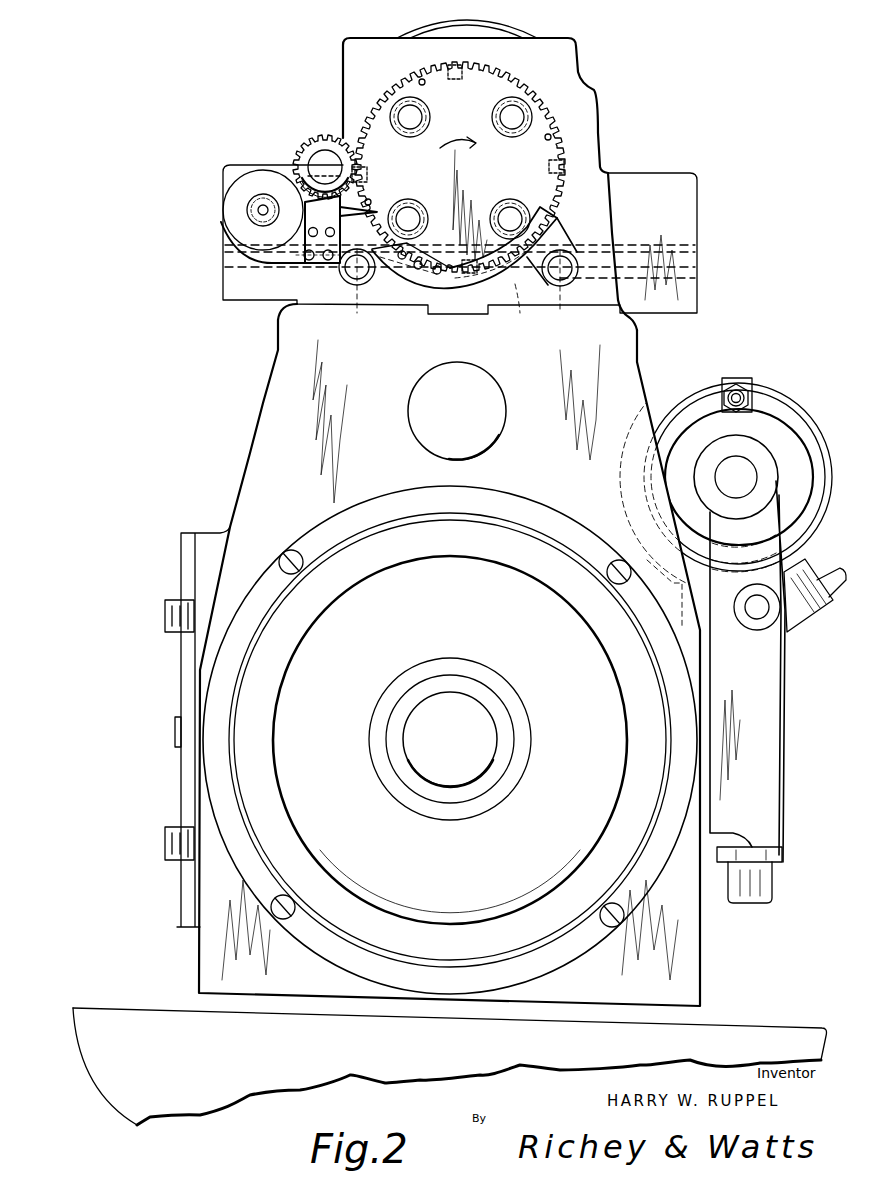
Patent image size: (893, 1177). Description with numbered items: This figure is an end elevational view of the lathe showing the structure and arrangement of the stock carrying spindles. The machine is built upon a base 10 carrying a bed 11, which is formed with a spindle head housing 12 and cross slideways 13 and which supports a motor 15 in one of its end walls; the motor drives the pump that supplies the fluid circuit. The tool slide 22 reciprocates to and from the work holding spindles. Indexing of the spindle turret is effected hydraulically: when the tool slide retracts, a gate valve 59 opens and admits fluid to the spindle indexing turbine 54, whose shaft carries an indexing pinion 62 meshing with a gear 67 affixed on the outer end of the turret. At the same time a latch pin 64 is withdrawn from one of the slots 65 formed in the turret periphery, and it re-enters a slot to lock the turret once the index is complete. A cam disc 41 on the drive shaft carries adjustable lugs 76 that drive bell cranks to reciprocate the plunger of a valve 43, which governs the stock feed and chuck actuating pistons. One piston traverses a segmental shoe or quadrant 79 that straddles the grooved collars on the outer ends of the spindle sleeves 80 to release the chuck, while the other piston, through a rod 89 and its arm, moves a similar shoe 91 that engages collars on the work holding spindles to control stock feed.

The base 10 is at (106, 1060).
The bed 11 is at (268, 457).
The spindle head housing 12 is at (568, 100).
The cross slideways 13 is at (230, 261).
The motor 15 is at (450, 740).
The tool slide 22 is at (470, 32).
The cam disc 41 is at (779, 396).
The valve 43 is at (765, 735).
The spindle indexing turbine 54 is at (320, 141).
The gate valve 59 is at (248, 193).
The indexing pinion 62 is at (333, 142).
The latch pin 64 is at (300, 172).
The slots 65 is at (572, 158).
The gear 67 is at (482, 92).
The adjustable lugs 76 is at (745, 378).
The segmental shoe or quadrant 79 is at (515, 292).
The spindle sleeves 80 is at (423, 111).
The rod 89 is at (357, 272).
The shoe 91 is at (385, 275).